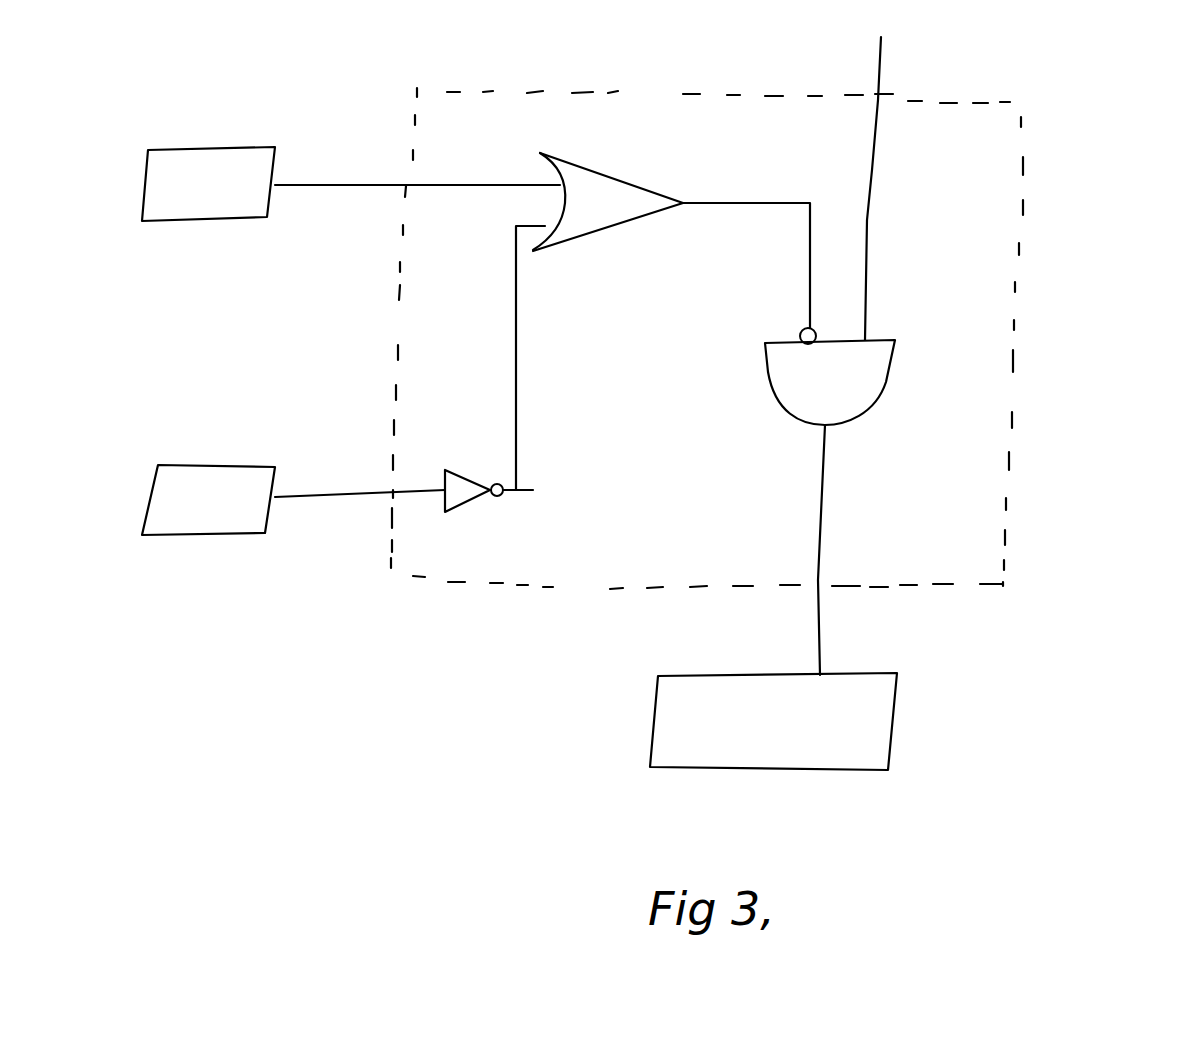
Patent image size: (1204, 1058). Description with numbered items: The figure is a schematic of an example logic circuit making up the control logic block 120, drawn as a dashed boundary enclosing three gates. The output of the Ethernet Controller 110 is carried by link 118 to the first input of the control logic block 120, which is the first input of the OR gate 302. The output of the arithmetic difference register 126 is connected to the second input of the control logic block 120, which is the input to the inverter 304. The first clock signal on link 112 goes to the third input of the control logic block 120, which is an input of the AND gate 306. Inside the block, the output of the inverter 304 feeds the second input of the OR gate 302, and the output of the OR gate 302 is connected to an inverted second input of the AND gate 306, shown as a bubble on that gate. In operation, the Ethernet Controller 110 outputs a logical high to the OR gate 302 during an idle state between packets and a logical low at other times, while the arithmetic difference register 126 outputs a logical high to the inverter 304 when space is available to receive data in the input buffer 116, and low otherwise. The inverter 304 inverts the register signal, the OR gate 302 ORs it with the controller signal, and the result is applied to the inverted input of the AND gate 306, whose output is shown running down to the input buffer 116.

The Ethernet Controller 110 is at (215, 220).
The link 118 is at (320, 185).
The arithmetic difference register 126 is at (228, 462).
The inverter 304 is at (477, 510).
The OR gate 302 is at (640, 178).
The link 112 is at (883, 62).
The AND gate 306 is at (768, 398).
The input buffer 116 is at (895, 727).
The control logic block 120 is at (1023, 207).